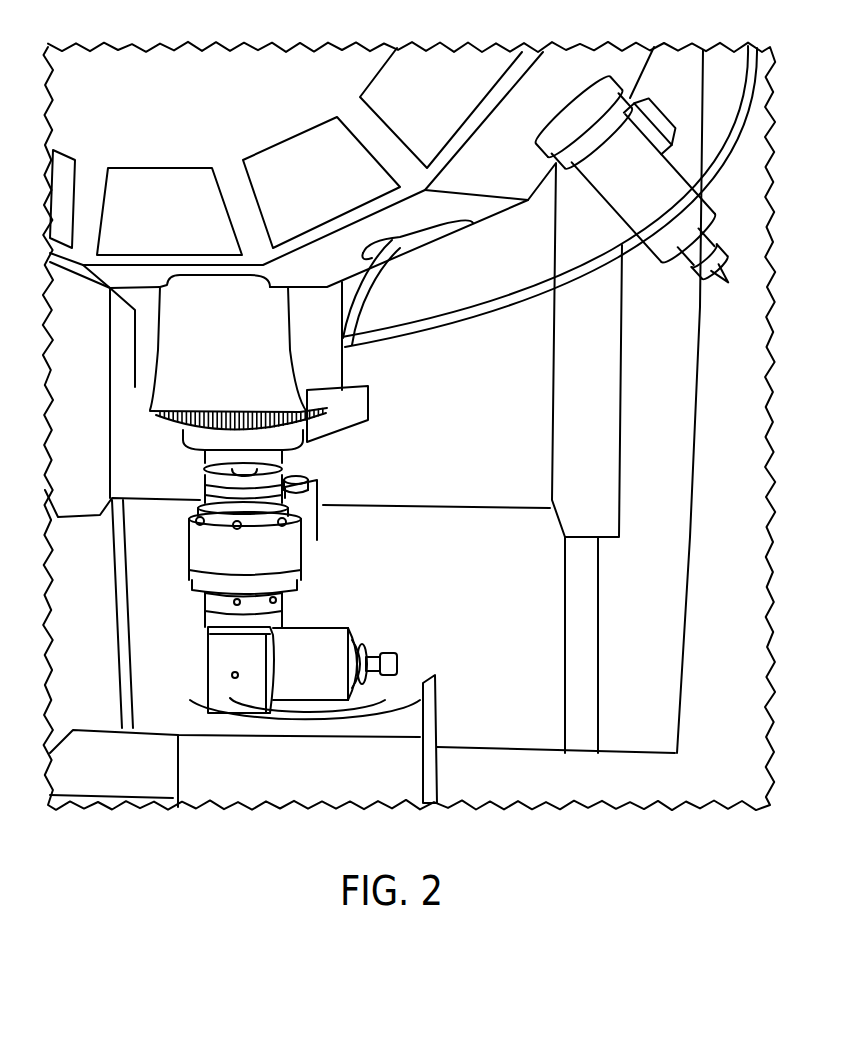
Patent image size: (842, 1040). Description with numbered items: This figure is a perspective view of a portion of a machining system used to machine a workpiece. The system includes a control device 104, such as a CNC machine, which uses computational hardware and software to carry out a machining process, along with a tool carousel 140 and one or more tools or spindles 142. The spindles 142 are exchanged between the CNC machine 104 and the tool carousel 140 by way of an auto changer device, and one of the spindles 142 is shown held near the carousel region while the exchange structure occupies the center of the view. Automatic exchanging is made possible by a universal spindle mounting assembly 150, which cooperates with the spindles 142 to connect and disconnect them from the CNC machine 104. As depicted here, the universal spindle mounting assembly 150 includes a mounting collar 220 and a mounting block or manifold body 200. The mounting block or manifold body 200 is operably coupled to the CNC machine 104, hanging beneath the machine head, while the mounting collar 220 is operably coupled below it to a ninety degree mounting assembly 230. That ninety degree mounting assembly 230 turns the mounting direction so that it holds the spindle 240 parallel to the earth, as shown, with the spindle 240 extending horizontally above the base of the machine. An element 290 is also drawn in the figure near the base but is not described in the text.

The control device 104 is at (330, 357).
The tool carousel 140 is at (197, 65).
The spindles 142 is at (620, 187).
The universal spindle mounting assembly 150 is at (310, 463).
The mounting block or manifold body 200 is at (360, 413).
The mounting collar 220 is at (172, 556).
The ninety degree mounting assembly 230 is at (192, 665).
The spindle 240 is at (337, 622).
The stop wedge 290 is at (425, 683).